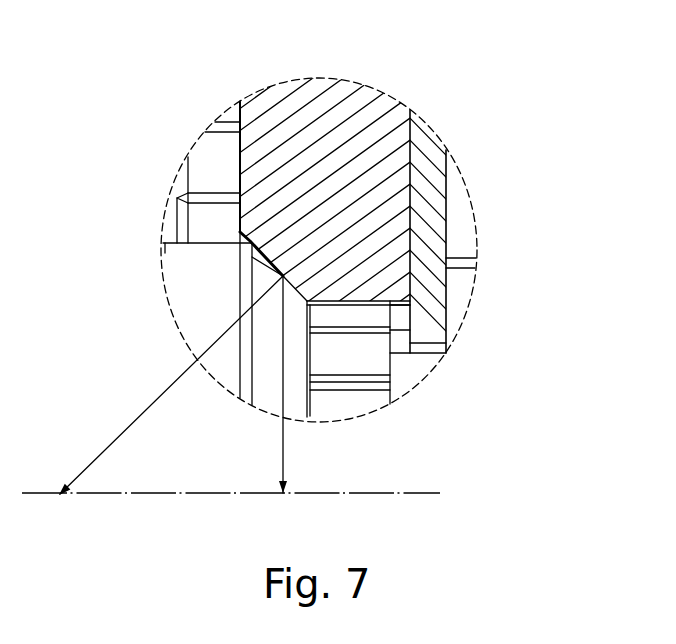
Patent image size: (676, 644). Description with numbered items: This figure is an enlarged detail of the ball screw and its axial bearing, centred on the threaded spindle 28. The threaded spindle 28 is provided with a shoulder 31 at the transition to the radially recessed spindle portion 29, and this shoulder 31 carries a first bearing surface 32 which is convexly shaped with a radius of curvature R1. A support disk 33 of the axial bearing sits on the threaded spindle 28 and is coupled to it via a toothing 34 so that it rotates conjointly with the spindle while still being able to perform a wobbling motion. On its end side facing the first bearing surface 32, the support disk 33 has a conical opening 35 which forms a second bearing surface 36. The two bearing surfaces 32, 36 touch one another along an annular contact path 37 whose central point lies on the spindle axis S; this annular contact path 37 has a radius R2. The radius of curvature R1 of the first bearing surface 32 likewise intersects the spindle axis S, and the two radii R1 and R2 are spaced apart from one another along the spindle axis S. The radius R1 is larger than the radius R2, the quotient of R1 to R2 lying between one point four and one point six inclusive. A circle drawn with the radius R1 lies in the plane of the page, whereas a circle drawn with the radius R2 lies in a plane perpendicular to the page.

The threaded spindle 28 is at (183, 278).
The radially recessed spindle portion 29 is at (408, 370).
The shoulder 31 is at (242, 255).
The bearing surface 32 is at (292, 273).
The support disk 33 is at (357, 122).
The toothing 34 is at (327, 354).
The conical opening 35 is at (161, 324).
The second bearing surface 36 is at (250, 258).
The annular contact path 37 is at (286, 271).
The spindle axis S is at (437, 493).
The radius of curvature R1 is at (171, 385).
The radius R2 is at (264, 384).